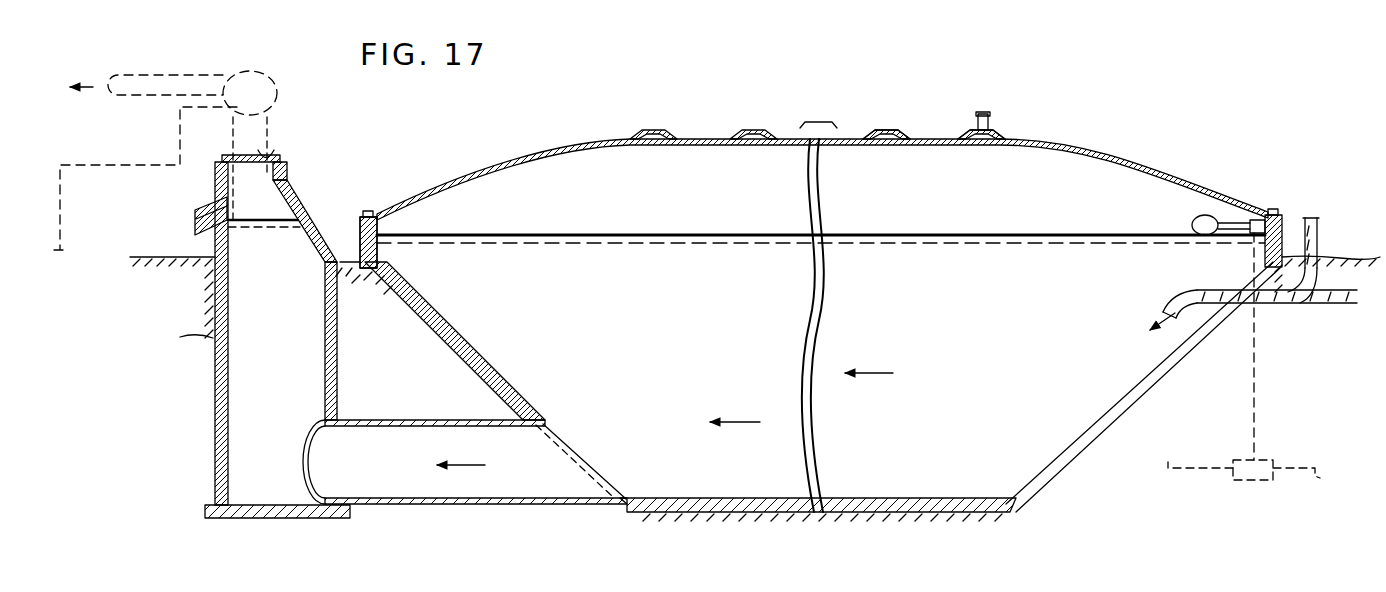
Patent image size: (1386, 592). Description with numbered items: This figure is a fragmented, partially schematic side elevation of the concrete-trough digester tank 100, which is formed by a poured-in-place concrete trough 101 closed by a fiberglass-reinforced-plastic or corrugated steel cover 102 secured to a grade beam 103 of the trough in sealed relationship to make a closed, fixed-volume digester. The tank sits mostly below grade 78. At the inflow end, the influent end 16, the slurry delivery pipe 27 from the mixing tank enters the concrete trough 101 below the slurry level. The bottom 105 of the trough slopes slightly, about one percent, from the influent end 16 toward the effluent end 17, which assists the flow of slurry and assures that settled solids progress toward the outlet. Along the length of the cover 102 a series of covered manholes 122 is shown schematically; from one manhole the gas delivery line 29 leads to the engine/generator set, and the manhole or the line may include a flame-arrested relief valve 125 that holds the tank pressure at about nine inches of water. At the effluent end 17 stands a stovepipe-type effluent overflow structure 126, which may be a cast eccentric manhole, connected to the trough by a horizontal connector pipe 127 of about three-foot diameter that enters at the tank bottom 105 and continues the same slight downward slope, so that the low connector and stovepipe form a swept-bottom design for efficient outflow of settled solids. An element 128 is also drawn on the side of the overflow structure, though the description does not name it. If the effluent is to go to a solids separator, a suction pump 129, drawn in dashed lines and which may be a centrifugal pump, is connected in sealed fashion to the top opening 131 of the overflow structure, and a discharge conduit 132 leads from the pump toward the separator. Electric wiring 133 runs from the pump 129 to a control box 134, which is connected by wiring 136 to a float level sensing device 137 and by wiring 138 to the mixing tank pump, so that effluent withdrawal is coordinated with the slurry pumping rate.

The influent end 16 is at (1289, 201).
The effluent end 17 is at (358, 204).
The slurry delivery pipe 27 is at (1352, 304).
The gas delivery line 29 is at (989, 107).
The grade 78 is at (1320, 256).
The digester tank 100 is at (691, 132).
The concrete trough 101 is at (1098, 429).
The cover 102 is at (900, 118).
The grade beam 103 is at (359, 233).
The bottom 105 is at (755, 498).
The covered manholes 122 is at (757, 131).
The flame-arrested relief valve 125 is at (966, 128).
The effluent overflow structure 126 is at (215, 335).
The horizontal connector pipe 127 is at (470, 505).
The inlet plate 128 is at (196, 212).
The suction pump 129 is at (276, 97).
The top opening 131 is at (262, 150).
The discharge conduit 132 is at (154, 97).
The electric wiring 133 is at (1180, 462).
The control box 134 is at (1270, 458).
The wiring 136 is at (1253, 397).
The float level sensing device 137 is at (1243, 217).
The wiring 138 is at (1305, 462).